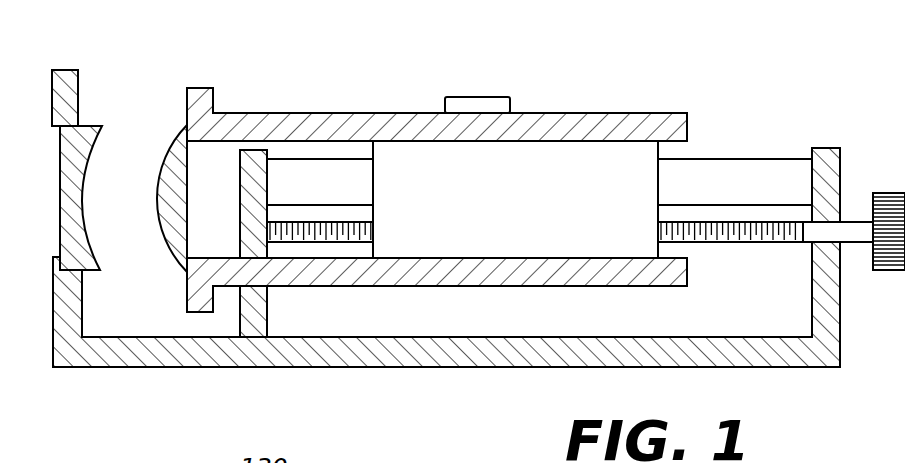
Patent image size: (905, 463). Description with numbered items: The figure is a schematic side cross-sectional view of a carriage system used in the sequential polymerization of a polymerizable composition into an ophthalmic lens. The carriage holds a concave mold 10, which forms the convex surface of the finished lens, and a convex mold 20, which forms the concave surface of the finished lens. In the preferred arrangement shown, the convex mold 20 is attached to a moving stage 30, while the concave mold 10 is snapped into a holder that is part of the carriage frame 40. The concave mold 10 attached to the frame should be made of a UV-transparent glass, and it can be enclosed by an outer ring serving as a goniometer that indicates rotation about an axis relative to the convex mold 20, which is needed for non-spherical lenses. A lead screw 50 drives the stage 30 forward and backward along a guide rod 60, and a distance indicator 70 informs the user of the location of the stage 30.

The concave mold 10 is at (101, 128).
The convex mold 20 is at (167, 133).
The moving stage 30 is at (600, 163).
The carriage frame 40 is at (402, 353).
The lead screw 50 is at (782, 228).
The guide rod 60 is at (717, 170).
The distance indicator 70 is at (477, 95).